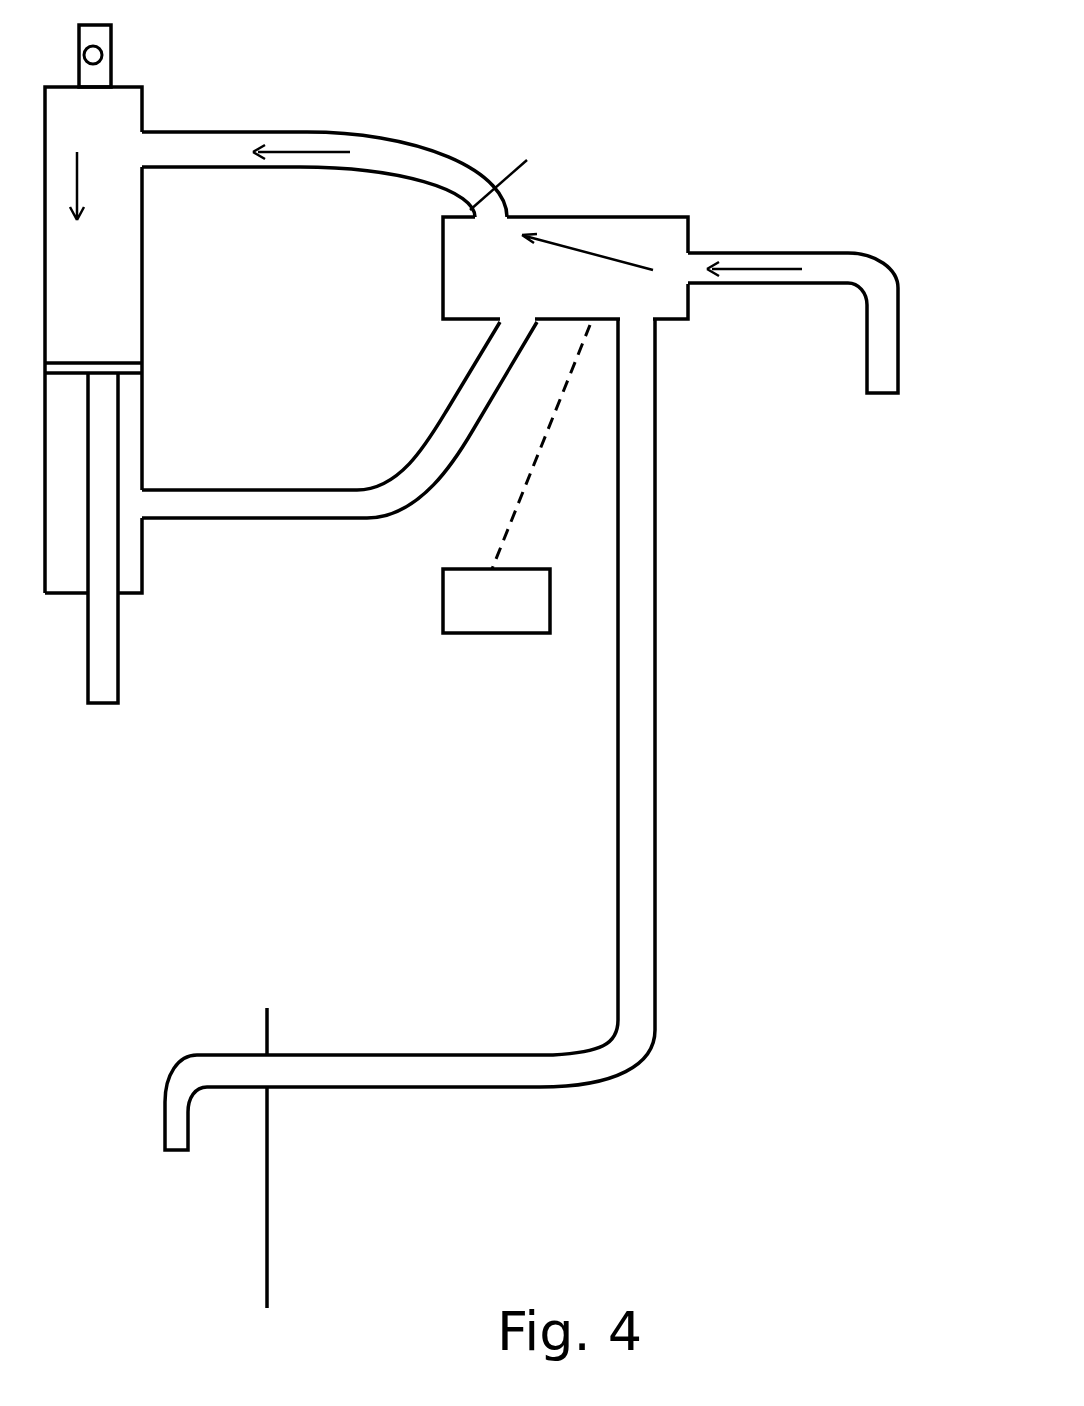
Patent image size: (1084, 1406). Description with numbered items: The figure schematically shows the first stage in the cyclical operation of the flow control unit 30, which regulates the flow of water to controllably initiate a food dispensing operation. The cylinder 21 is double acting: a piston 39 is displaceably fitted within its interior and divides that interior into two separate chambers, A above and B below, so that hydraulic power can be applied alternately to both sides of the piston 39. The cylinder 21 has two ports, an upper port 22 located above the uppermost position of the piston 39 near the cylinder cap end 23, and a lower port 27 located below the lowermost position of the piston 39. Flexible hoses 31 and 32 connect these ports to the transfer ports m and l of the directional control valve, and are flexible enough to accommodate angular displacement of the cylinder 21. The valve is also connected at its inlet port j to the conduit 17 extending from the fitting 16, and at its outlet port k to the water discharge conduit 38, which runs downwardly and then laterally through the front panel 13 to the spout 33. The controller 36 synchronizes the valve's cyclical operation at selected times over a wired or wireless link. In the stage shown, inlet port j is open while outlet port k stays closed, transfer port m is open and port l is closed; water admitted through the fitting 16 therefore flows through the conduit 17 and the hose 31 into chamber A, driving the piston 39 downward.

The front panel 13 is at (268, 1218).
The fitting 16 is at (883, 348).
The conduit 17 is at (835, 276).
The cylinder 21 is at (145, 243).
The port 22 is at (145, 152).
The cylinder cap end 23 is at (95, 34).
The port 27 is at (147, 505).
The flow control unit 30 is at (606, 182).
The flexible hose 31 is at (418, 162).
The flexible hose 32 is at (287, 508).
The spout 33 is at (168, 1135).
The controller 36 is at (493, 633).
The water discharge conduit 38 is at (631, 670).
The piston 39 is at (137, 370).